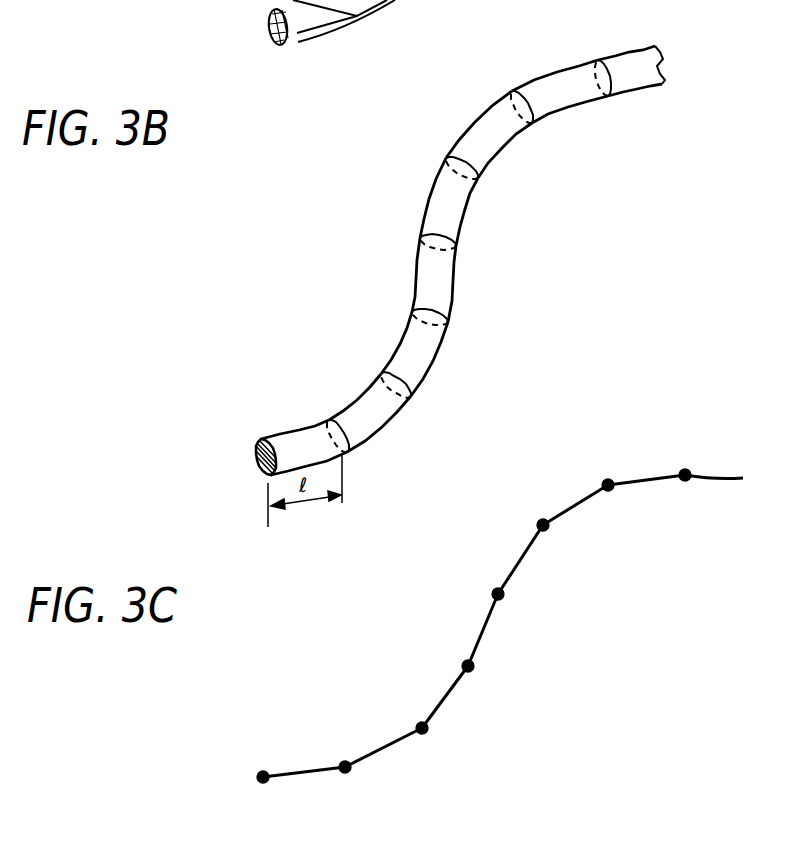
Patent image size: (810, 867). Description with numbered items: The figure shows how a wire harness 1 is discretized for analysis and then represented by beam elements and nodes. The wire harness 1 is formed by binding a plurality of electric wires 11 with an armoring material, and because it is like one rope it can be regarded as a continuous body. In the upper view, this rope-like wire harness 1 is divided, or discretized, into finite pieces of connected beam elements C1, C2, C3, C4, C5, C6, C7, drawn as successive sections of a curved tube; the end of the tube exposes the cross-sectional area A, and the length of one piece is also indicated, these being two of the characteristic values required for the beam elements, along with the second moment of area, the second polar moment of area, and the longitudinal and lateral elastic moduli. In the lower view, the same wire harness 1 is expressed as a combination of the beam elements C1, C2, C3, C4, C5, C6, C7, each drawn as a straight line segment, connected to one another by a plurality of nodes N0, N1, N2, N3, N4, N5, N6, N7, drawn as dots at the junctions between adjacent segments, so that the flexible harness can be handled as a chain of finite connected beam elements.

In FIG. 3B, the wire harness 1 is at (467, 123).
In FIG. 3B, the electric wires 11 is at (268, 30).
In FIG. 3B, the cross-sectional area A is at (257, 460).
In FIG. 3B, the beam element C1 is at (298, 438).
In FIG. 3C, the beam element C1 is at (300, 773).
In FIG. 3B, the beam element C2 is at (370, 418).
In FIG. 3C, the beam element C2 is at (383, 748).
In FIG. 3B, the beam element C3 is at (410, 347).
In FIG. 3C, the beam element C3 is at (447, 694).
In FIG. 3B, the beam element C4 is at (443, 285).
In FIG. 3C, the beam element C4 is at (487, 621).
In FIG. 3B, the beam element C5 is at (437, 200).
In FIG. 3C, the beam element C5 is at (522, 557).
In FIG. 3B, the beam element C6 is at (488, 147).
In FIG. 3C, the beam element C6 is at (576, 505).
In FIG. 3B, the beam element C7 is at (552, 83).
In FIG. 3C, the beam element C7 is at (643, 480).
In FIG. 3C, the node N0 is at (263, 770).
In FIG. 3C, the node N1 is at (345, 760).
In FIG. 3C, the node N2 is at (418, 725).
In FIG. 3C, the node N3 is at (464, 664).
In FIG. 3C, the node N4 is at (494, 591).
In FIG. 3C, the node N5 is at (538, 522).
In FIG. 3C, the node N6 is at (602, 482).
In FIG. 3C, the node N7 is at (685, 468).